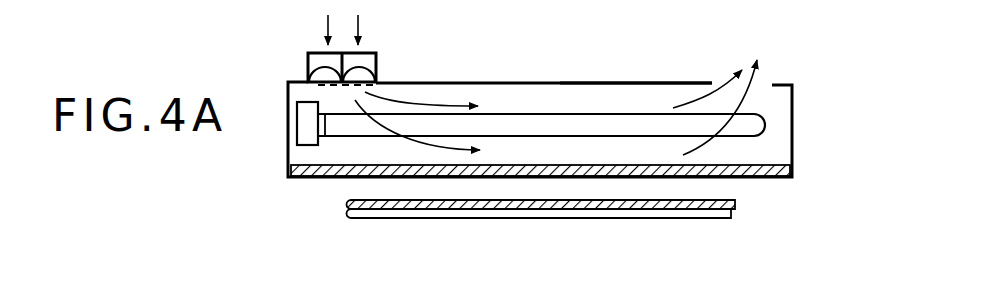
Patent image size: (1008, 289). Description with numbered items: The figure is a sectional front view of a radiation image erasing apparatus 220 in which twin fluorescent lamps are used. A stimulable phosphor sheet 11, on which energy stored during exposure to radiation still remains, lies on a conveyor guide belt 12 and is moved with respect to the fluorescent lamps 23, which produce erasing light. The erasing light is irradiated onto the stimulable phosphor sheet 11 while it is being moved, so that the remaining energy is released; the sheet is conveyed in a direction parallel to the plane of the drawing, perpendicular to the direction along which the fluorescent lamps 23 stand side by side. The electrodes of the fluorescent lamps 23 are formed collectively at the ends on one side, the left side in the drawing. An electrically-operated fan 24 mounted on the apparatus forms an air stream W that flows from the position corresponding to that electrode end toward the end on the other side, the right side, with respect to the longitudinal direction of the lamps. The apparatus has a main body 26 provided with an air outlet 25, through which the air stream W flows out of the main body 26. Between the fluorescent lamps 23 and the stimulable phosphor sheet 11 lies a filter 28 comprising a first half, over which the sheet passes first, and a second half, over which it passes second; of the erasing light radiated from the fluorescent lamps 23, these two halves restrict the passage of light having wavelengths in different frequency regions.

The radiation image erasing apparatus 220 is at (812, 114).
The electrically-operated fan 24 is at (366, 65).
The fluorescent lamp 23 is at (522, 125).
The main body 26 is at (612, 83).
The air outlet 25 is at (721, 87).
The air stream W is at (423, 100).
The filter 28 is at (306, 178).
The stimulable phosphor sheet 11 is at (740, 200).
The conveyor guide belt 12 is at (732, 218).